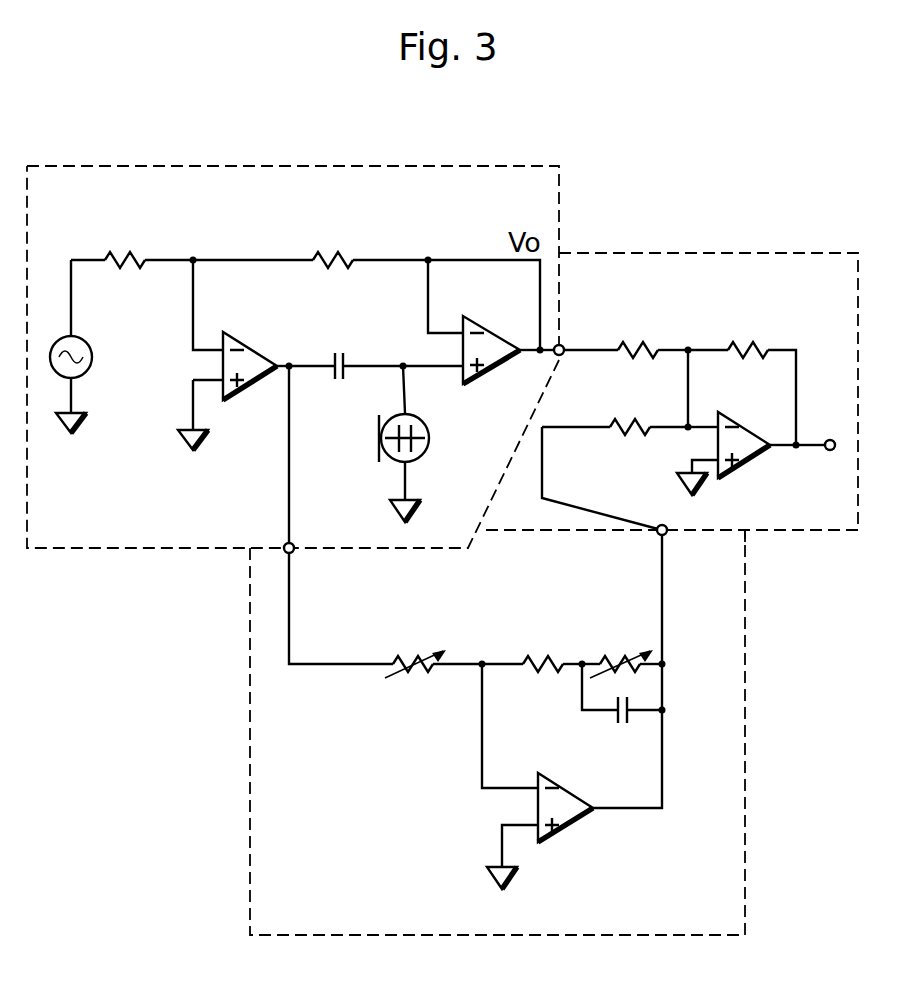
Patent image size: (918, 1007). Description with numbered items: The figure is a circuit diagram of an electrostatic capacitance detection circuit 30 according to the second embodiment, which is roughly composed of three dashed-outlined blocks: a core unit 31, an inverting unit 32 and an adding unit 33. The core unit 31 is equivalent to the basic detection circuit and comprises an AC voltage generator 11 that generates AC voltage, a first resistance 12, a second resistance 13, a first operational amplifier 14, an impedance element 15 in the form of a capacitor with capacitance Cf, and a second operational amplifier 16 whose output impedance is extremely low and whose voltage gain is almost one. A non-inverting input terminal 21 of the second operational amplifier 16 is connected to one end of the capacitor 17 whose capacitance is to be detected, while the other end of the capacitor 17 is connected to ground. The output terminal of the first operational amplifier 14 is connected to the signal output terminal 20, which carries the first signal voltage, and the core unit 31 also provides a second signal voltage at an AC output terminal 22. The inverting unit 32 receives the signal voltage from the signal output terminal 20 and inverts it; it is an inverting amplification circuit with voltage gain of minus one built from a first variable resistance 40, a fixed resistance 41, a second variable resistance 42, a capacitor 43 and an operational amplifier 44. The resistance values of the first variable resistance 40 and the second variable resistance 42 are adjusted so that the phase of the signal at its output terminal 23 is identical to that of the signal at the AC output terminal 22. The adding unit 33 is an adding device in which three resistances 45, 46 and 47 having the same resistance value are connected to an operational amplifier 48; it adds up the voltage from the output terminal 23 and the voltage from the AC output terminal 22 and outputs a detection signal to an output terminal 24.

The AC voltage generator 11 is at (90, 372).
The resistance (R1) 12 is at (127, 267).
The resistance (R2) 13 is at (322, 268).
The first operational amplifier 14 is at (236, 334).
The impedance element 15 is at (334, 380).
The second operational amplifier 16 is at (506, 314).
The capacitor 17 is at (428, 425).
The signal output terminal 20 is at (285, 546).
The non-inverting input terminal 21 is at (400, 370).
The AC output terminal 22 is at (562, 356).
The output terminal 23 is at (666, 536).
The output terminal 24 is at (831, 451).
The electrostatic capacitance detection circuit 30 is at (663, 178).
The core unit 31 is at (561, 170).
The inverting unit 32 is at (248, 665).
The adding unit 33 is at (752, 253).
The variable resistance (R4) 40 is at (412, 676).
The resistance (R5) 41 is at (538, 676).
The variable resistance (R6) 42 is at (628, 650).
The capacitor 43 is at (614, 720).
The operational amplifier 44 is at (576, 829).
The resistance (R7) 45 is at (655, 345).
The resistance (R8) 46 is at (630, 436).
The resistance (R9) 47 is at (750, 357).
The operational amplifier 48 is at (752, 422).